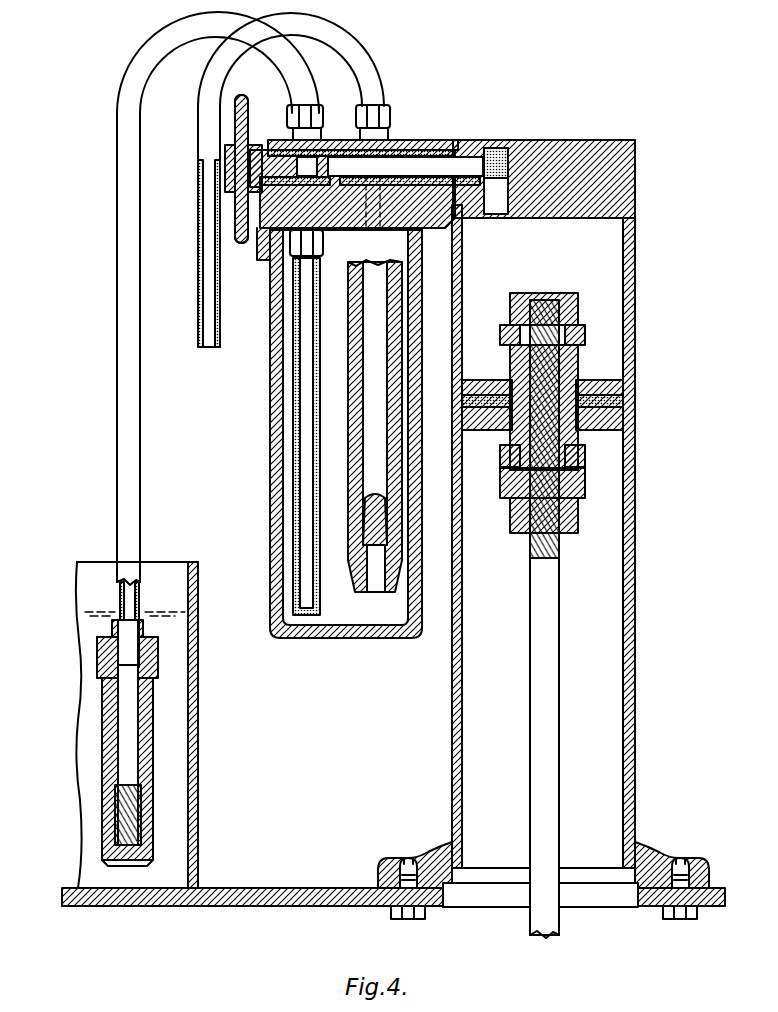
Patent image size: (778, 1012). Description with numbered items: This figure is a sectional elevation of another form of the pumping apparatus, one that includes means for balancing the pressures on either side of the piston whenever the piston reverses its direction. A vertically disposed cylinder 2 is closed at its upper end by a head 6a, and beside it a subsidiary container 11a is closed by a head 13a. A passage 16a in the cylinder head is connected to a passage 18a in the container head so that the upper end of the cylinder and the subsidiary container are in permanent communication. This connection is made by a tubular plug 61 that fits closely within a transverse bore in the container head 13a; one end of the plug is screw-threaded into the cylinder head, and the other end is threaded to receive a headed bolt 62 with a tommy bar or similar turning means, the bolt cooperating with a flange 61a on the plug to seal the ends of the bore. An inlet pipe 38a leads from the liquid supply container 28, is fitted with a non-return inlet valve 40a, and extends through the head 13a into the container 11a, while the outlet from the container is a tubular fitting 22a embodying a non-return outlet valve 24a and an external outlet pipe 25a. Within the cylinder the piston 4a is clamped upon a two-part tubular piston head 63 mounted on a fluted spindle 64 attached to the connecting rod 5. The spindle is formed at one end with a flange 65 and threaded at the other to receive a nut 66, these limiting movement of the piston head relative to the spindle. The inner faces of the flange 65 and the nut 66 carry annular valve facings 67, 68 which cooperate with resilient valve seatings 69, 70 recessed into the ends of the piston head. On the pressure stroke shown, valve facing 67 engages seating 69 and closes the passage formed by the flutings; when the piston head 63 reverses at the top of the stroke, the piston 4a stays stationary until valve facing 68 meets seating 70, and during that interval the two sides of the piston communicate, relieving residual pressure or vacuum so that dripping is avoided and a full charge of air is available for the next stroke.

The cylinder 2 is at (636, 644).
The piston 4a is at (590, 388).
The connecting rod 5 is at (550, 728).
The cylinder head 6a is at (560, 142).
The subsidiary container 11a is at (275, 455).
The container head 13a is at (400, 142).
The passage 16a is at (497, 222).
The passage 18a is at (283, 262).
The tubular fitting 22a is at (378, 582).
The non-return outlet valve 24a is at (360, 535).
The external outlet pipe 25a is at (365, 64).
The liquid supply container 28 is at (160, 563).
The inlet pipe 38a is at (140, 449).
The non-return inlet valve 40a is at (130, 824).
The tubular plug 61 is at (440, 142).
The flange 61a is at (262, 212).
The headed bolt 62 is at (240, 172).
The two-part tubular piston head 63 is at (512, 372).
The fluted spindle 64 is at (512, 442).
The flange 65 is at (578, 488).
The nut 66 is at (578, 305).
The valve facing 67 is at (505, 488).
The valve facing 68 is at (512, 328).
The resilient valve seating 69 is at (602, 441).
The resilient valve seating 70 is at (582, 342).